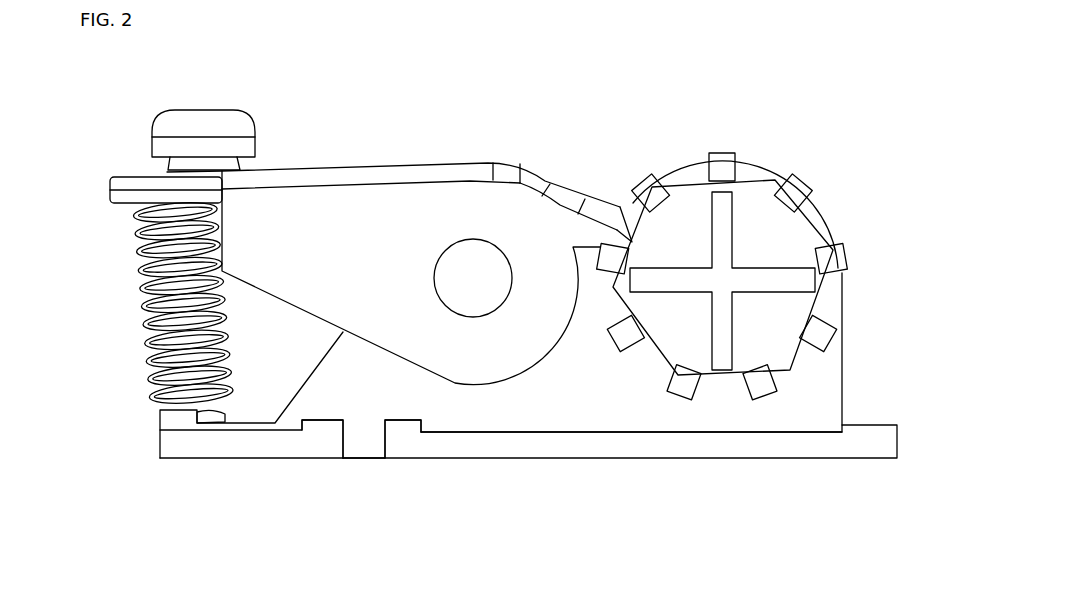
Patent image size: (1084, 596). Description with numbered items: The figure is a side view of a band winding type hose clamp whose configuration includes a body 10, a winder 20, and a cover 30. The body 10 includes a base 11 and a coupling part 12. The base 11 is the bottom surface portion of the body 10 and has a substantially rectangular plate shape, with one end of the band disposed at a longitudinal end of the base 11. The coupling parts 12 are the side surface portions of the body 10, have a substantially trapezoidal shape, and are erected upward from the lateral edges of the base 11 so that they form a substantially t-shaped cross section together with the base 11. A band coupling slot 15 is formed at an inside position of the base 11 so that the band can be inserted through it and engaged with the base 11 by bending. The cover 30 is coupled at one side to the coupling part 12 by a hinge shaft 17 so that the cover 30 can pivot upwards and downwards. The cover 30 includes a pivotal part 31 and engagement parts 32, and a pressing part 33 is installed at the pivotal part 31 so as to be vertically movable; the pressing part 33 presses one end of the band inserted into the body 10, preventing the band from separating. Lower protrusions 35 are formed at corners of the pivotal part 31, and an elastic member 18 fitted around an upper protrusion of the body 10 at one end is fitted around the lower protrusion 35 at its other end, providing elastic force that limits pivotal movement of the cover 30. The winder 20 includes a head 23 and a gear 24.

The body 10 is at (622, 395).
The base 11 is at (525, 442).
The coupling part 12 is at (573, 405).
The band coupling slot 15 is at (405, 440).
The hinge shaft 17 is at (471, 293).
The elastic member 18 is at (187, 410).
The winder 20 is at (778, 252).
The head 23 is at (753, 223).
The gear 24 is at (797, 190).
The cover 30 is at (527, 162).
The pivotal part 31 is at (425, 176).
The engagement part 32 is at (332, 208).
The pressing part 33 is at (223, 143).
The lower protrusion 35 is at (138, 188).